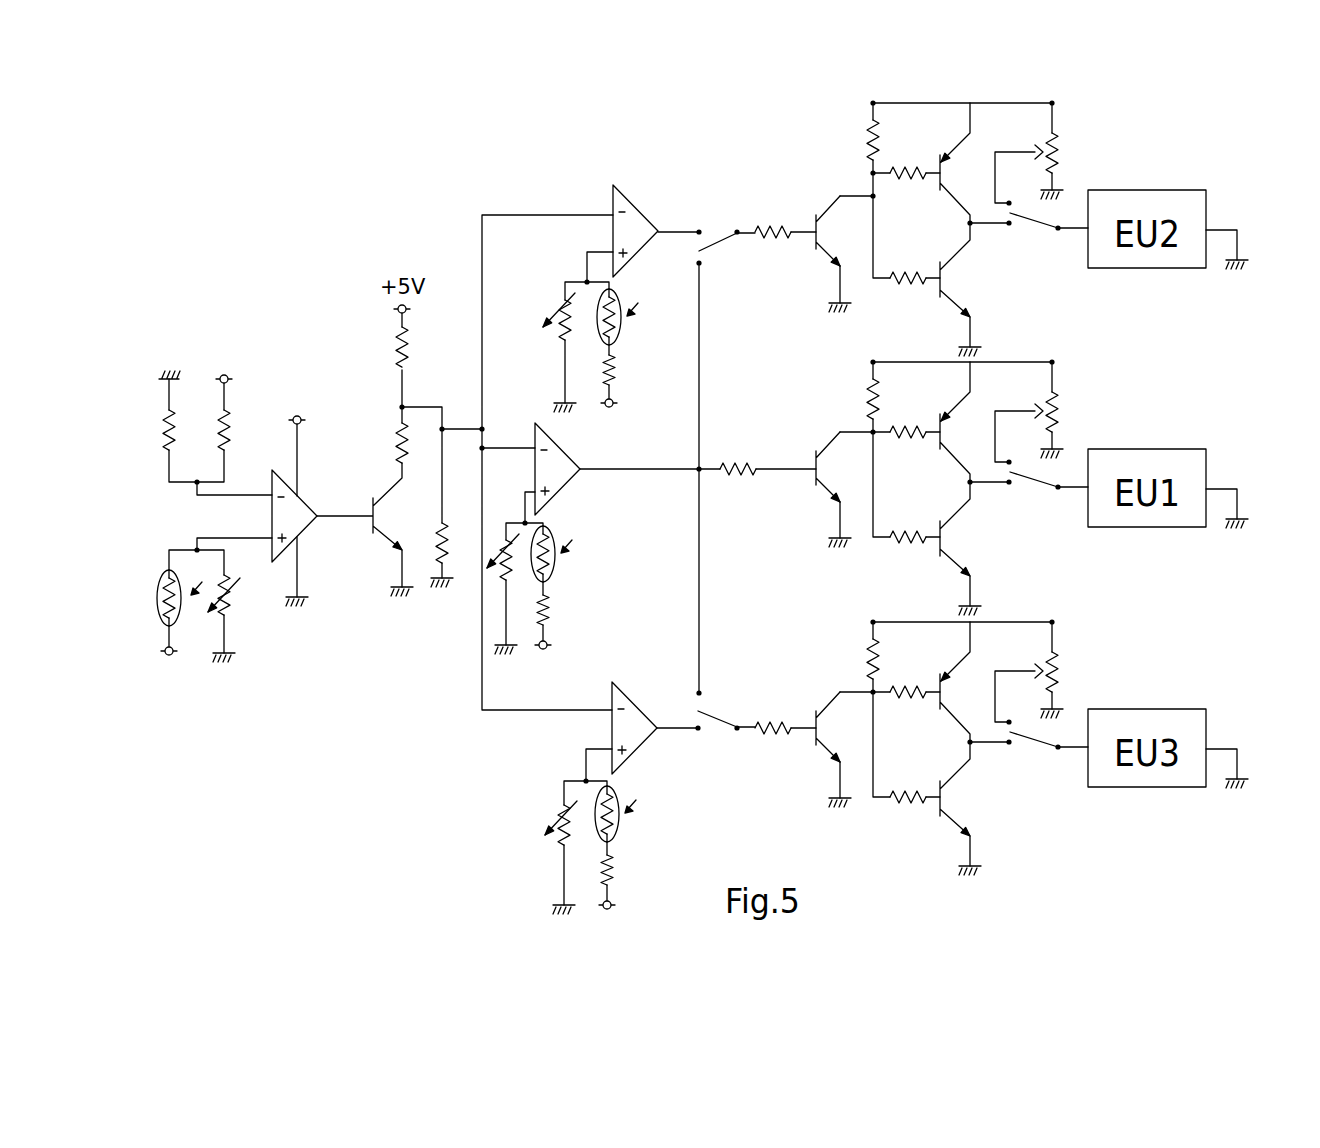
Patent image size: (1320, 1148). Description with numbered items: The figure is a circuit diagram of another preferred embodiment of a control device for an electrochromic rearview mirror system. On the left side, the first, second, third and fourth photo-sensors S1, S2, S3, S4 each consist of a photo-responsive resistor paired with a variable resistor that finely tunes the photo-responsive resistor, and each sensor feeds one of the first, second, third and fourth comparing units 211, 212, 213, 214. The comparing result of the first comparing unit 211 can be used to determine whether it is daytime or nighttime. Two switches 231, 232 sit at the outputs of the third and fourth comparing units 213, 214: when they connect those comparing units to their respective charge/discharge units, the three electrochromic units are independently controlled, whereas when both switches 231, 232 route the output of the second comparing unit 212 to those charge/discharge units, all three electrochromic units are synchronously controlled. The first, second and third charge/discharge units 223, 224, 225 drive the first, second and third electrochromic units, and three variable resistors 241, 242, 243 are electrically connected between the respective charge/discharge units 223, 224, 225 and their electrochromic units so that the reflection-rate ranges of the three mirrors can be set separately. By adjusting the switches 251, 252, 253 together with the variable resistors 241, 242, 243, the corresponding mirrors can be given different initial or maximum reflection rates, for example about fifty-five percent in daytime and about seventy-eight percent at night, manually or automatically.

The first photo-sensor S1 is at (193, 656).
The second photo-sensor S2 is at (558, 571).
The third photo-sensor S3 is at (615, 344).
The fourth photo-sensor S4 is at (618, 853).
The first comparing unit 211 is at (307, 498).
The second comparing unit 212 is at (568, 456).
The third comparing unit 213 is at (648, 214).
The fourth comparing unit 214 is at (627, 691).
The first charge/discharge unit 223 is at (903, 358).
The second charge/discharge unit 224 is at (947, 102).
The third charge/discharge unit 225 is at (903, 618).
The switch 231 is at (714, 234).
The switch 232 is at (712, 732).
The variable resistor 241 is at (1063, 409).
The variable resistor 242 is at (1063, 150).
The variable resistor 243 is at (1063, 675).
The switch 251 is at (1030, 488).
The switch 252 is at (1030, 229).
The switch 253 is at (1030, 749).